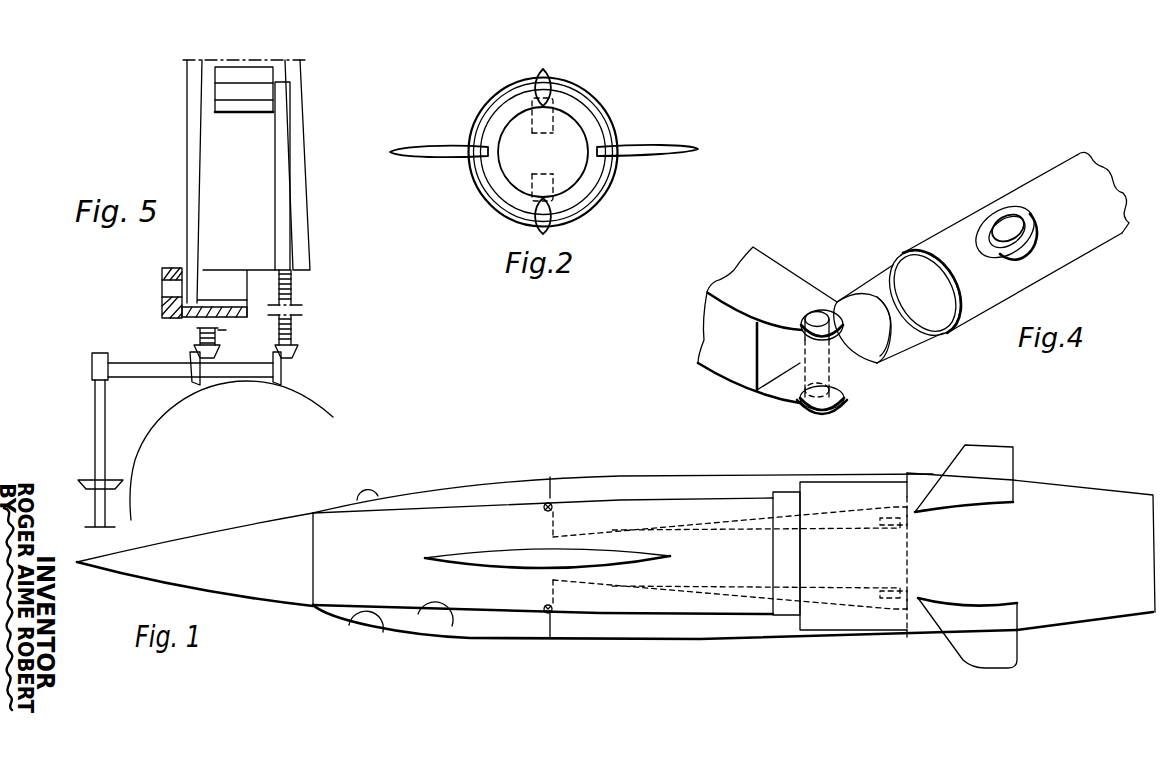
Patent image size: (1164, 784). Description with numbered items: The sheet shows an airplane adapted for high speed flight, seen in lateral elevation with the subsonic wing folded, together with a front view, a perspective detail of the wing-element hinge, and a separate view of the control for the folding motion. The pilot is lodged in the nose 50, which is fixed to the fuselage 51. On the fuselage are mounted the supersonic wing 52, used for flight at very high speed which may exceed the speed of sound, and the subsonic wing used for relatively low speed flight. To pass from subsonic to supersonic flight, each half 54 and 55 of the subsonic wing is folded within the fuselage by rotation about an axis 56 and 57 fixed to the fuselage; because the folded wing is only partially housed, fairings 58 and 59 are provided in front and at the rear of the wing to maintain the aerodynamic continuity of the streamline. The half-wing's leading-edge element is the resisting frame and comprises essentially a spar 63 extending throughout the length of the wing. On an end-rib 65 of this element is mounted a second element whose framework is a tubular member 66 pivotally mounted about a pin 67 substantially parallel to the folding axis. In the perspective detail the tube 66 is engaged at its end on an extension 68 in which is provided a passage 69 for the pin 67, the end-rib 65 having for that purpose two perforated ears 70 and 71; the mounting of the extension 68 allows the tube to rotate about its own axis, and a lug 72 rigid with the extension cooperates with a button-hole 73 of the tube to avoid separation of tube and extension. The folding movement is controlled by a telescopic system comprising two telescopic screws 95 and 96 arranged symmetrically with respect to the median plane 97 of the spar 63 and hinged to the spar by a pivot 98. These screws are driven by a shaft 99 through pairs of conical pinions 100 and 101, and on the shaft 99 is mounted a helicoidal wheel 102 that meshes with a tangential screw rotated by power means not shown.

In FIG. 1, the nose 50 is at (302, 595).
In FIG. 1, the fuselage 51 is at (444, 630).
In FIG. 2, the supersonic wing 52 is at (406, 150).
In FIG. 1, the supersonic wing 52 is at (470, 550).
In FIG. 2, the half of the subsonic wing 54 is at (547, 123).
In FIG. 1, the half of the subsonic wing 54 is at (731, 488).
In FIG. 2, the half of the subsonic wing 55 is at (548, 181).
In FIG. 1, the half of the subsonic wing 55 is at (651, 628).
In FIG. 5, the axis 56 is at (162, 286).
In FIG. 1, the axis 56 is at (553, 505).
In FIG. 1, the axis 57 is at (546, 613).
In FIG. 2, the fairing 58 is at (533, 80).
In FIG. 1, the fairing 58 is at (377, 495).
In FIG. 2, the fairing 59 is at (553, 229).
In FIG. 1, the fairing 59 is at (381, 636).
In FIG. 5, the spar 63 is at (310, 165).
In FIG. 4, the end-rib 65 is at (767, 272).
In FIG. 4, the tubular member 66 is at (1057, 176).
In FIG. 4, the pin 67 is at (829, 313).
In FIG. 4, the extension 68 is at (917, 333).
In FIG. 4, the passage 69 is at (830, 366).
In FIG. 4, the perforated ear 70 is at (790, 322).
In FIG. 4, the perforated ear 71 is at (793, 396).
In FIG. 4, the lug 72 is at (998, 218).
In FIG. 4, the button-hole 73 is at (984, 220).
In FIG. 5, the telescopic screw 95 is at (196, 339).
In FIG. 5, the telescopic screw 96 is at (291, 336).
In FIG. 5, the median plane 97 is at (248, 165).
In FIG. 5, the pivot 98 is at (215, 102).
In FIG. 5, the shaft 99 is at (178, 377).
In FIG. 5, the pair of conical pinions 100 is at (192, 357).
In FIG. 5, the pair of conical pinions 101 is at (278, 361).
In FIG. 5, the helicoidal wheel 102 is at (92, 370).